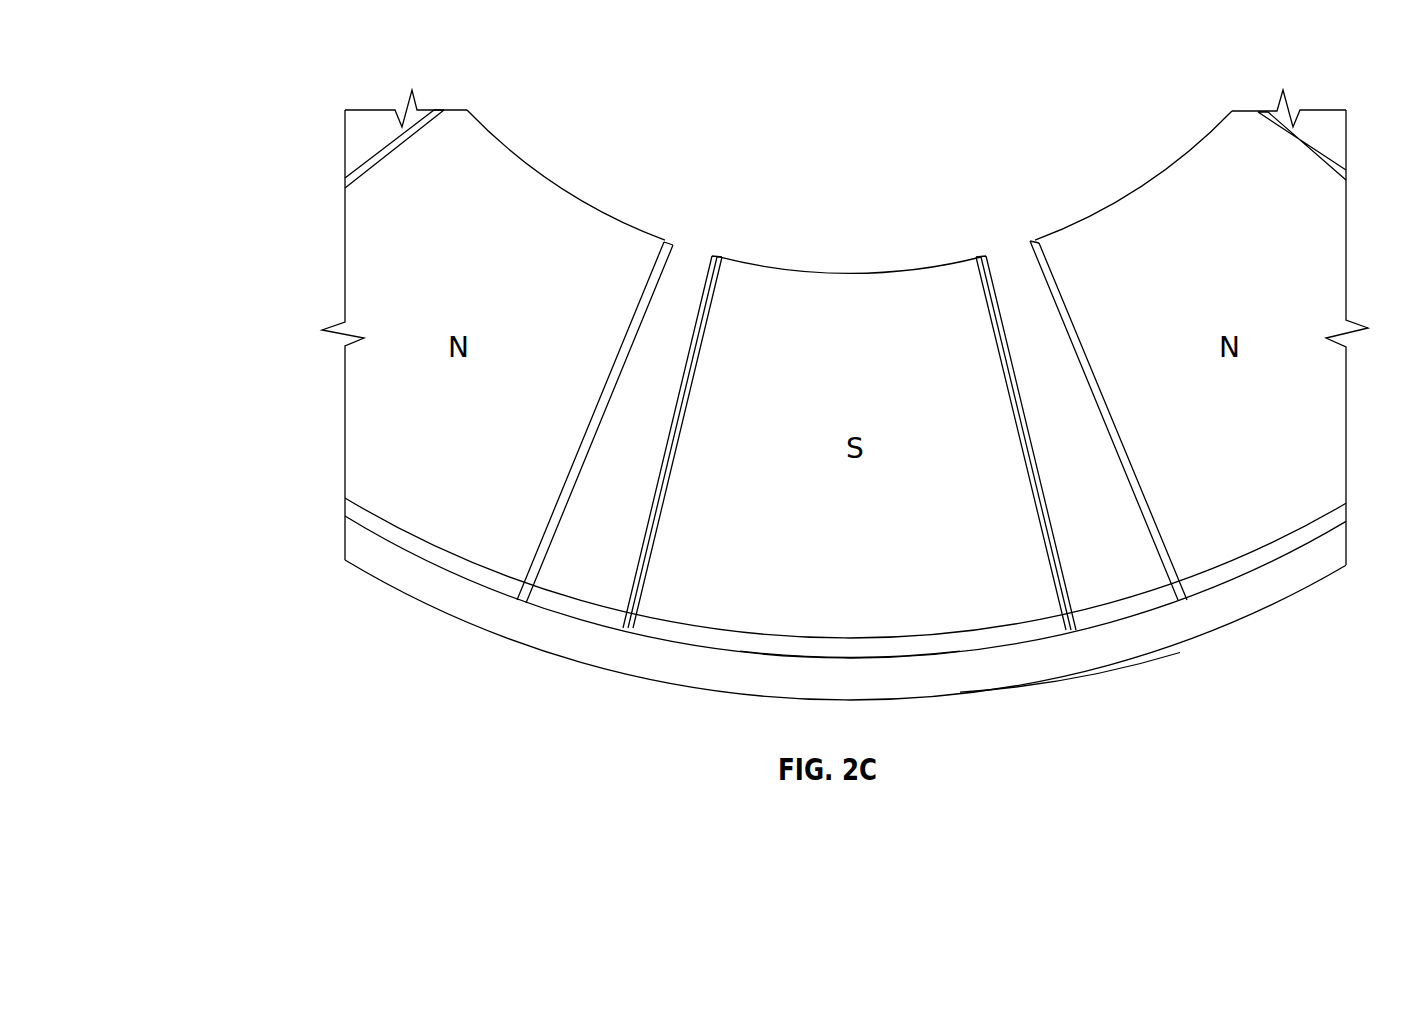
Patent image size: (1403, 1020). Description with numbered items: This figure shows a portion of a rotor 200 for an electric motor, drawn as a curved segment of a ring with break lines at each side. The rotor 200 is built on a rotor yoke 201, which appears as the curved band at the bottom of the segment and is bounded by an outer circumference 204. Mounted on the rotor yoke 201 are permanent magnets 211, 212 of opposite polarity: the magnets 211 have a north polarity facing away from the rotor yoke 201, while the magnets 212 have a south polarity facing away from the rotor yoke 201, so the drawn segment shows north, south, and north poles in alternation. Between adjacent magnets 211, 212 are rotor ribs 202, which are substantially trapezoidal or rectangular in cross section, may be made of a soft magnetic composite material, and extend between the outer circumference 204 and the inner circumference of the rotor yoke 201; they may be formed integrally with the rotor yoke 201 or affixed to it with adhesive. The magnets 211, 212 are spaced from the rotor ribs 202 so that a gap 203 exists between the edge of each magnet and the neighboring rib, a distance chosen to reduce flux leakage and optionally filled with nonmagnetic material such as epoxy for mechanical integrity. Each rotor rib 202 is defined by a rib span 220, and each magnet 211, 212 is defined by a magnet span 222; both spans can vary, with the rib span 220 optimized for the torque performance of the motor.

The rotor 200 is at (281, 216).
The rotor yoke 201 is at (537, 651).
The rotor ribs 202 is at (577, 621).
The gap 203 is at (1031, 239).
The outer circumference 204 is at (1067, 657).
The magnets 211 is at (343, 365).
The magnets 212 is at (867, 659).
The rib span 220 is at (719, 249).
The magnet span 222 is at (725, 245).